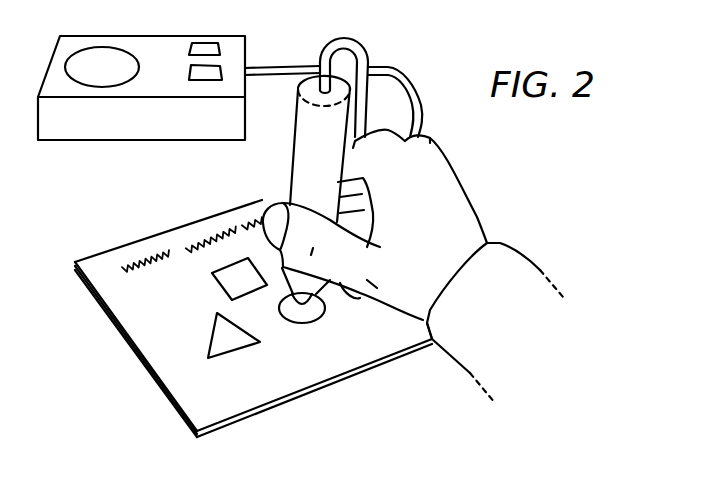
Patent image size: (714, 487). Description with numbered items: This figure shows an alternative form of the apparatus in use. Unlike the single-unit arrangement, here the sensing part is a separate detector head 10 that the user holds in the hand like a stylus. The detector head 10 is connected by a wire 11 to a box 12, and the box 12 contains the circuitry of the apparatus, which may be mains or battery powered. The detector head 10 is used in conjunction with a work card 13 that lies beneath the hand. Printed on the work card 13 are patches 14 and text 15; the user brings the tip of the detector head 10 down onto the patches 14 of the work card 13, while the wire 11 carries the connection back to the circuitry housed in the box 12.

The detector head 10 is at (297, 156).
The wire 11 is at (403, 68).
The box 12 is at (158, 35).
The work card 13 is at (197, 405).
The patches 14 is at (220, 288).
The text 15 is at (142, 264).